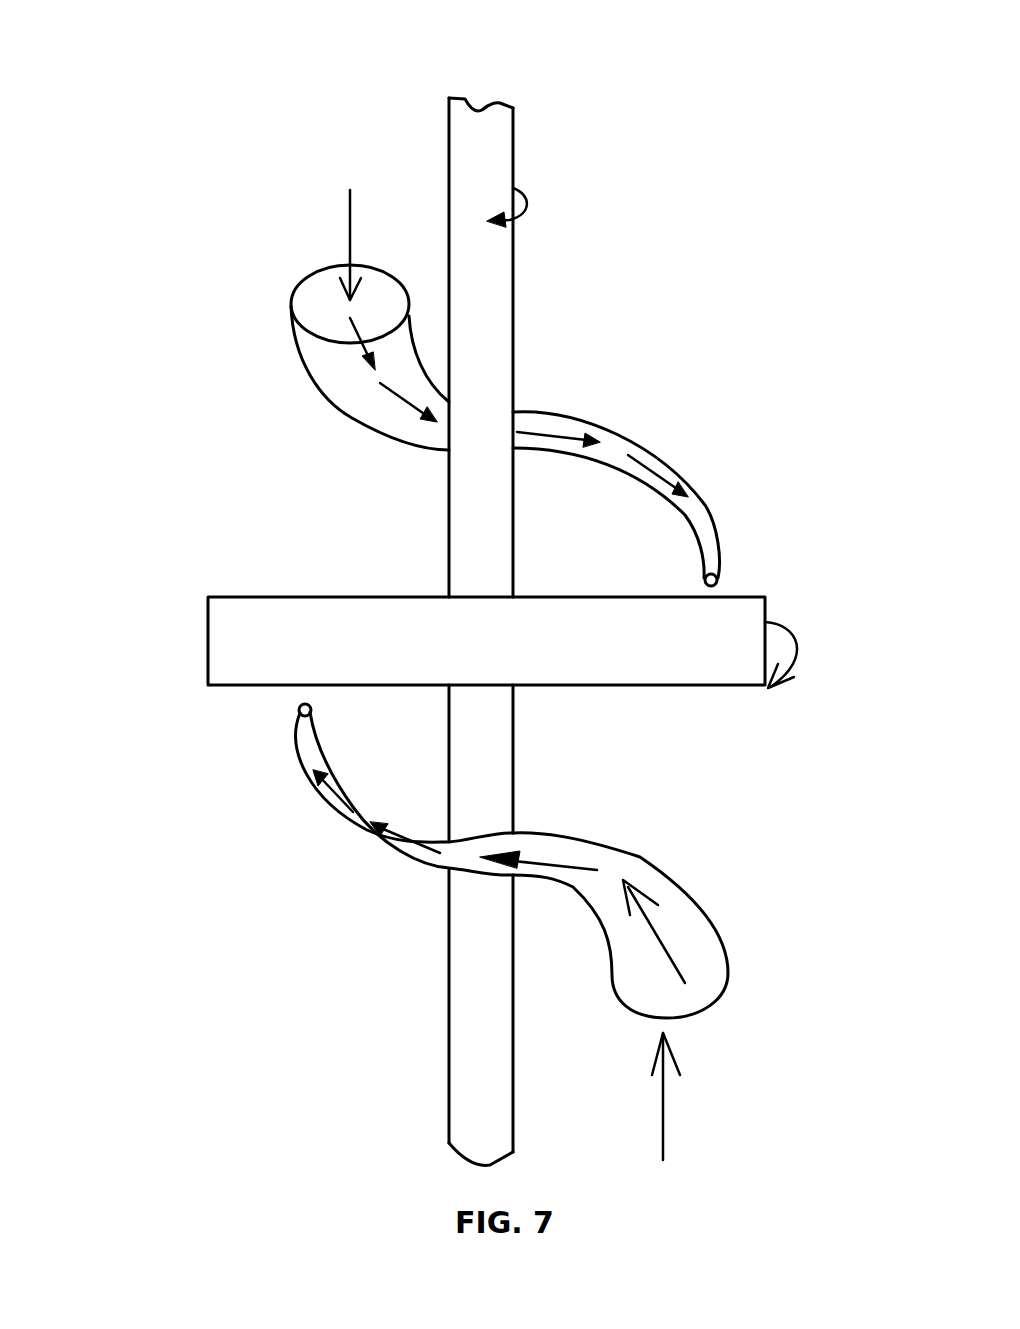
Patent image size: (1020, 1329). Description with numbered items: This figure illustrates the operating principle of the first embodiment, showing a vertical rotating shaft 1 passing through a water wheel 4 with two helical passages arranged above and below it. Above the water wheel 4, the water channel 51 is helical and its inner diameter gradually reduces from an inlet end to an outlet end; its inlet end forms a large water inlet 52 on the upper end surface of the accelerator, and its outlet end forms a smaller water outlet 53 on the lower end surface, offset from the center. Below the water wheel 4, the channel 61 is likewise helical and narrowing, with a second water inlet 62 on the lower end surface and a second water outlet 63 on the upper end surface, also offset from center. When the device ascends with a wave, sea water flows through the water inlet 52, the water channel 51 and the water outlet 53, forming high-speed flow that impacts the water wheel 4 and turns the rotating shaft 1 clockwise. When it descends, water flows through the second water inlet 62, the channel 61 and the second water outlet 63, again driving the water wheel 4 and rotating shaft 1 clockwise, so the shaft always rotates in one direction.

The rotating shaft 1 is at (497, 298).
The water wheel 4 is at (717, 668).
The water channel 51 is at (461, 304).
The water inlet 52 is at (313, 290).
The water outlet 53 is at (717, 567).
The channel 61 is at (493, 932).
The second water inlet 62 is at (707, 1008).
The second water outlet 63 is at (297, 717).